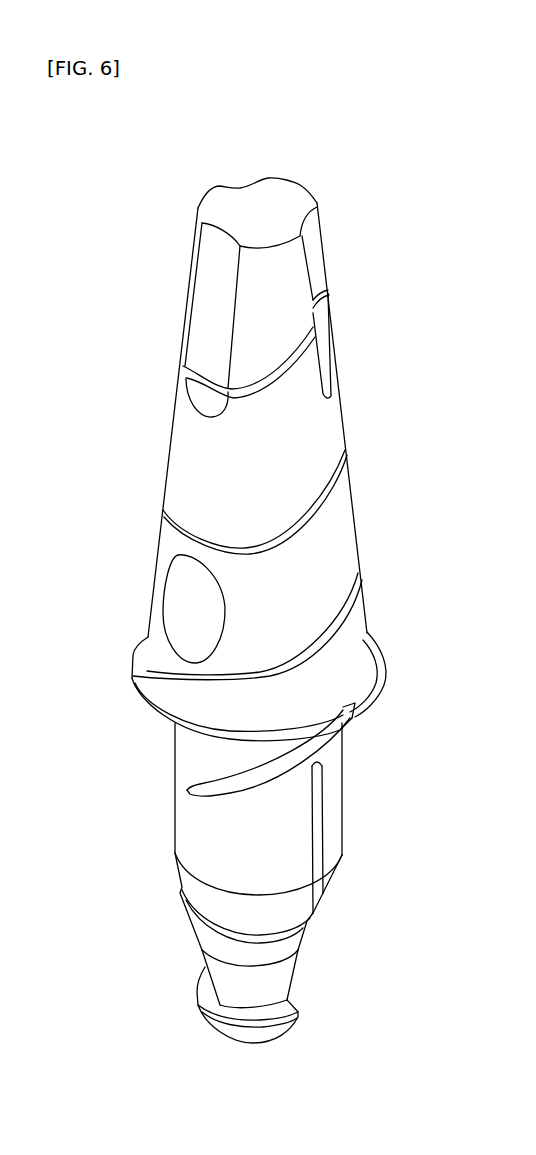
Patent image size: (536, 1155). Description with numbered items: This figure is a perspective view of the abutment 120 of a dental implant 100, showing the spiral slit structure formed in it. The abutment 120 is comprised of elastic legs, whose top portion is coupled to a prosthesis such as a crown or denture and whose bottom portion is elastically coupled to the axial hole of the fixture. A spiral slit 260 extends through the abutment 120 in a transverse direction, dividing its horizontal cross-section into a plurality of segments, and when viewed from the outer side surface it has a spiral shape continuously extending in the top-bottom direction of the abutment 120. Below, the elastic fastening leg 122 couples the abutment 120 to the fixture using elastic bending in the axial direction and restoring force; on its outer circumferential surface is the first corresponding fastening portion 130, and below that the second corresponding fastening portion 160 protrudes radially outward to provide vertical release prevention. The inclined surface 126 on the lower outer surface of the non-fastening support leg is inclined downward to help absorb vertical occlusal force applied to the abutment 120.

The dental implant 100 is at (118, 188).
The abutment 120 is at (350, 547).
The spiral slit 260 is at (332, 498).
The inclined surface 126 is at (329, 891).
The first corresponding fastening portion 130 is at (190, 930).
The elastic fastening leg 122 is at (218, 978).
The second corresponding fastening portion 160 is at (213, 1022).